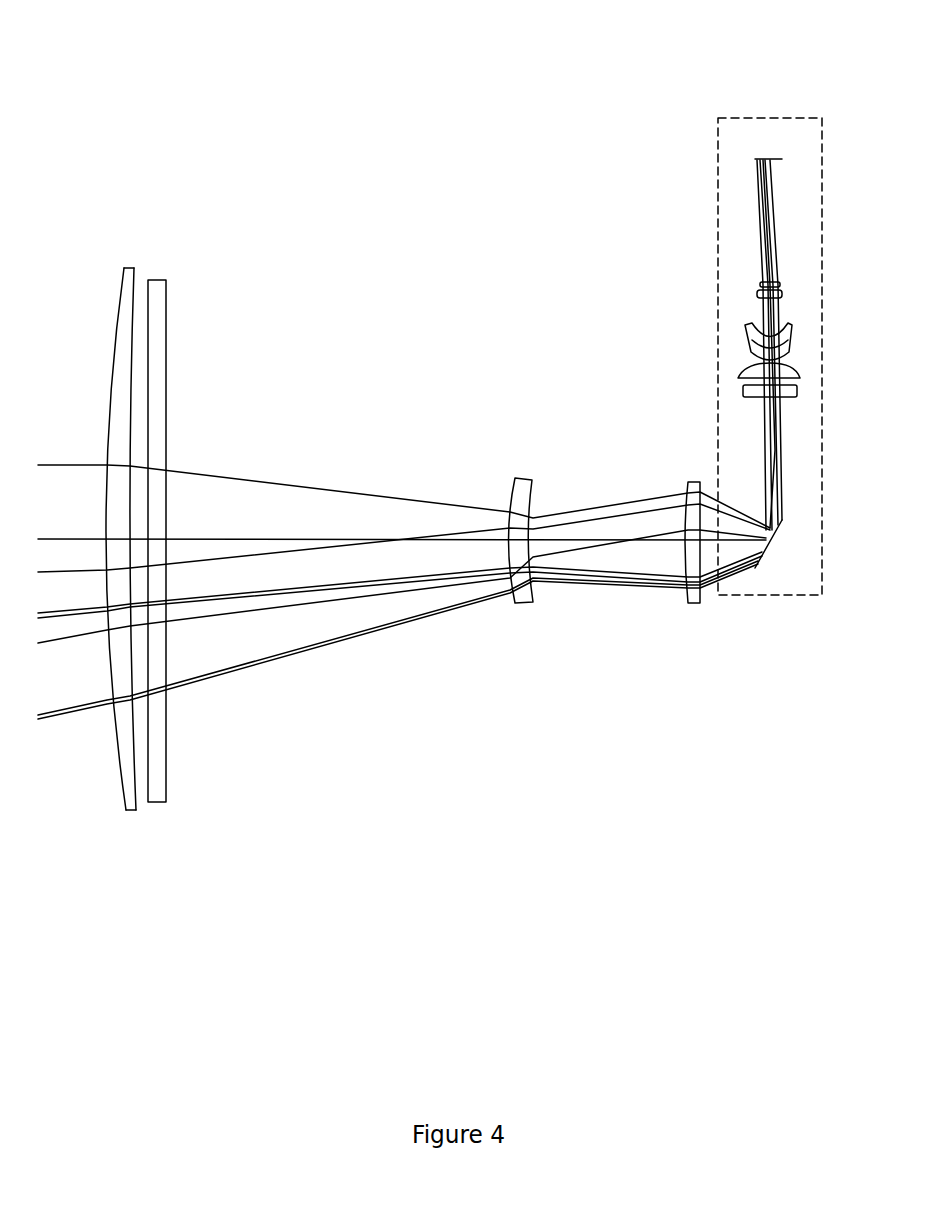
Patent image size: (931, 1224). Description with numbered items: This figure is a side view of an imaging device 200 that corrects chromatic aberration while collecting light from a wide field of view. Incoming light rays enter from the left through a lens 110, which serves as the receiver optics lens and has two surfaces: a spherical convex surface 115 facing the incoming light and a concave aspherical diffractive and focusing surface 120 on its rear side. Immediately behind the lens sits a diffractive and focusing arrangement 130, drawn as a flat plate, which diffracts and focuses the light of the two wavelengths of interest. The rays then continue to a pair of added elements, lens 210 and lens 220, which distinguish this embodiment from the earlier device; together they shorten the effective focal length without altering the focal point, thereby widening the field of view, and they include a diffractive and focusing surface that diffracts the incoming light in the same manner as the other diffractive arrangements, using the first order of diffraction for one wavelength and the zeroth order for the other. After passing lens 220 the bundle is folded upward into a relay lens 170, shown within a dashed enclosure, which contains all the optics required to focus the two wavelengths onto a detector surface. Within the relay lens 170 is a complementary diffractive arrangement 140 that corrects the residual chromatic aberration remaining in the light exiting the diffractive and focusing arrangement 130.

The imaging device 200 is at (351, 64).
The lens 110 is at (120, 385).
The convex surface 115 is at (125, 278).
The diffractive and focusing surface 120 is at (138, 272).
The diffractive and focusing arrangement 130 is at (163, 398).
The lens 210 is at (526, 603).
The lens 220 is at (694, 603).
The relay lens 170 is at (718, 218).
The complementary diffractive arrangement 140 is at (745, 390).